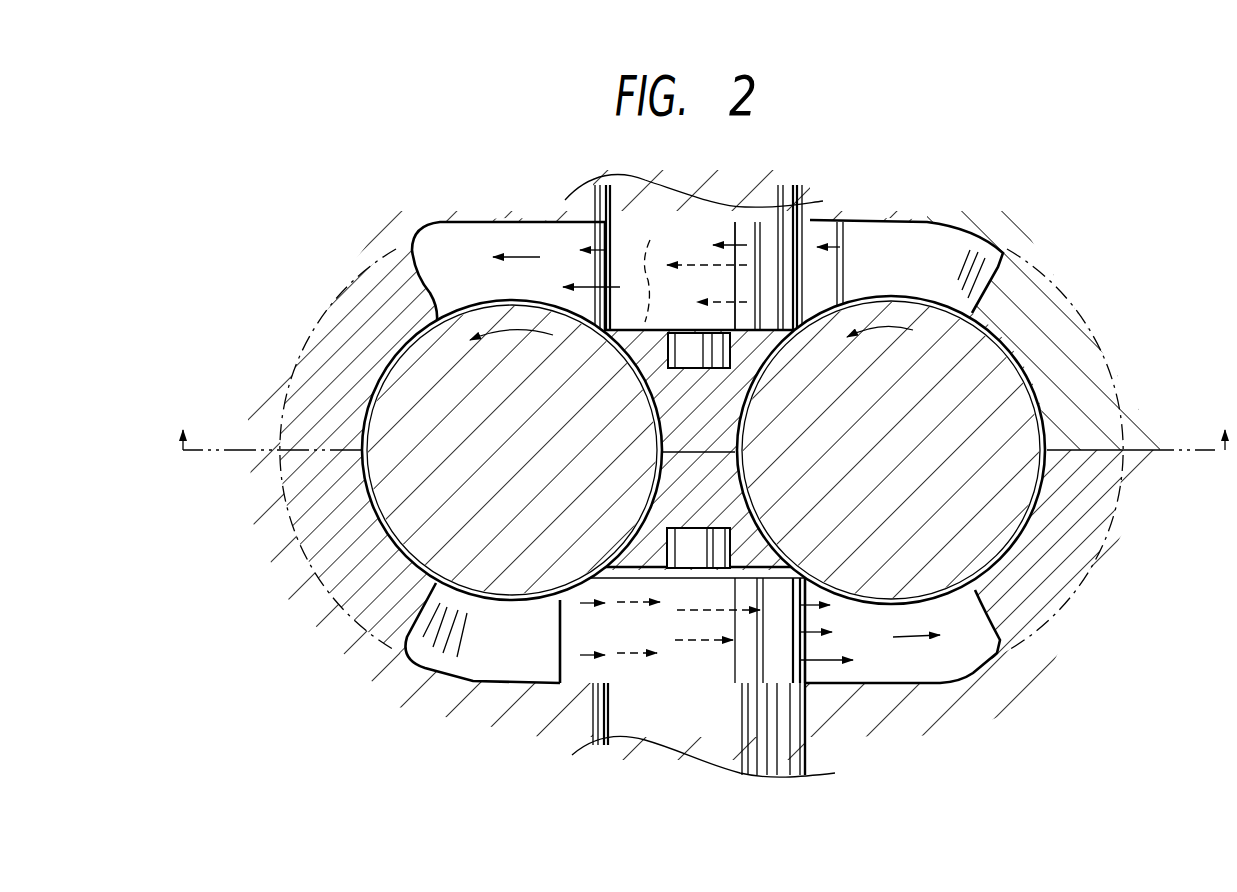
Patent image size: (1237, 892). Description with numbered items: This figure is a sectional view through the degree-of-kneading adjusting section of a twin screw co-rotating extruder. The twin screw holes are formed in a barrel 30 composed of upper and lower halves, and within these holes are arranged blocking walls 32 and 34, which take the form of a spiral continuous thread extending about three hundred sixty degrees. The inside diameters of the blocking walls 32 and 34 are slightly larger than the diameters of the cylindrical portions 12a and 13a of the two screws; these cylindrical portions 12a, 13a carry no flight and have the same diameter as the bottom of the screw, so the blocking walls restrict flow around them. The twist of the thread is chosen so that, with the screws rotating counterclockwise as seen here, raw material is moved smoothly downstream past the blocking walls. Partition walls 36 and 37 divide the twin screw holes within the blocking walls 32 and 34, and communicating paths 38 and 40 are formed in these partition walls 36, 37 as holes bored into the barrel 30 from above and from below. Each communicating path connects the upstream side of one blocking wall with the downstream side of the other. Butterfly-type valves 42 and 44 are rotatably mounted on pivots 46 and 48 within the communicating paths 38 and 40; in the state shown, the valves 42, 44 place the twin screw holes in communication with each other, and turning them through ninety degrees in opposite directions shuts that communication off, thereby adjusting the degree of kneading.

The barrel 30 is at (973, 680).
The blocking wall 32 is at (1040, 310).
The blocking wall 34 is at (352, 313).
The cylindrical portion 12a is at (990, 518).
The cylindrical portion 13a is at (403, 522).
The partition wall 36 is at (747, 343).
The partition wall 37 is at (757, 600).
The communicating path 38 is at (820, 237).
The communicating path 40 is at (580, 665).
The valve 42 is at (677, 243).
The valve 44 is at (700, 667).
The pivot 46 is at (657, 337).
The pivot 48 is at (693, 550).